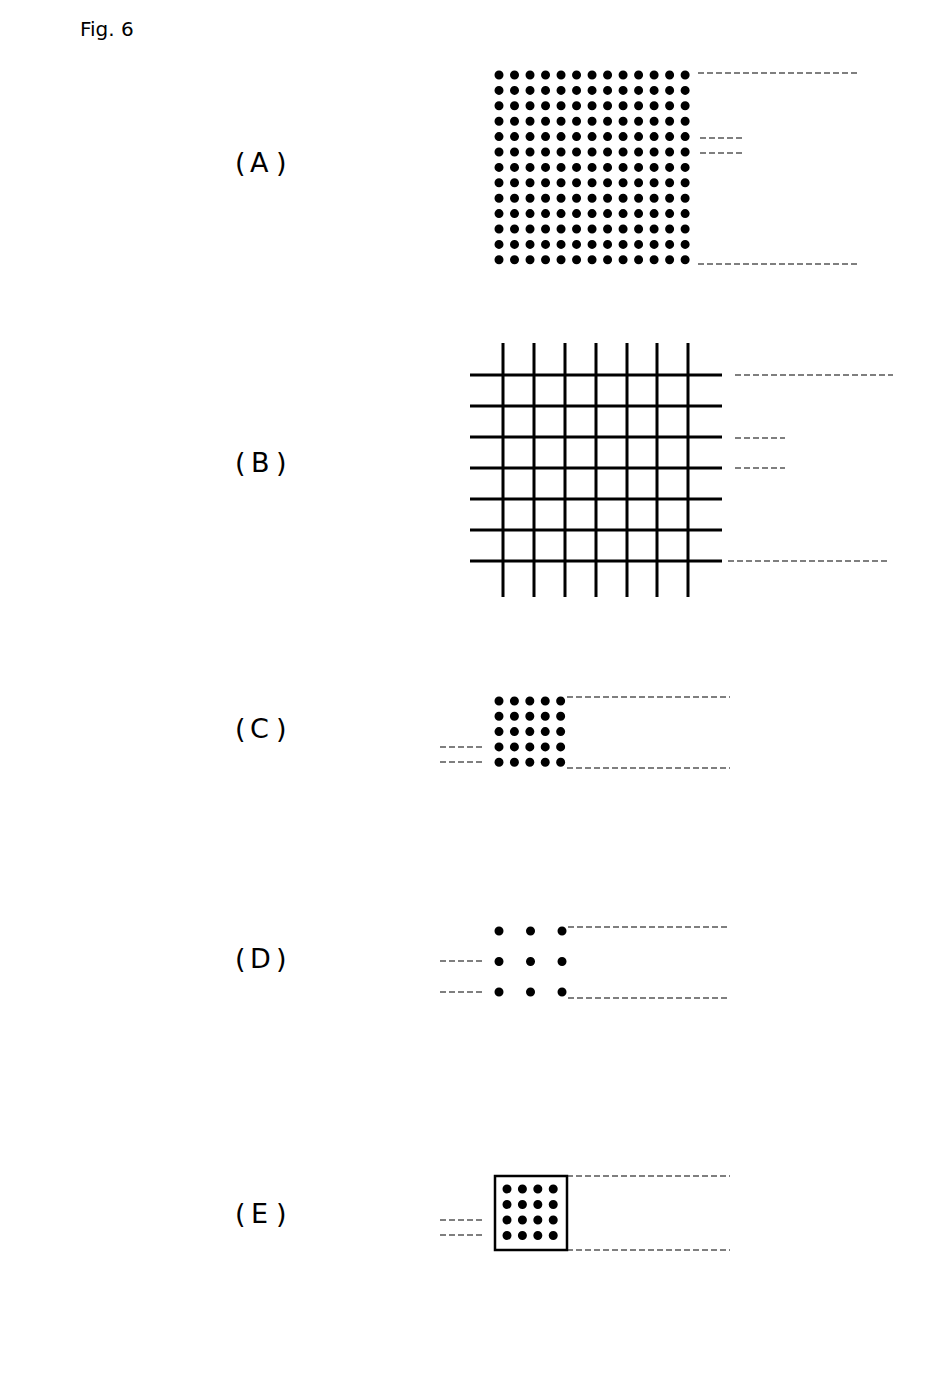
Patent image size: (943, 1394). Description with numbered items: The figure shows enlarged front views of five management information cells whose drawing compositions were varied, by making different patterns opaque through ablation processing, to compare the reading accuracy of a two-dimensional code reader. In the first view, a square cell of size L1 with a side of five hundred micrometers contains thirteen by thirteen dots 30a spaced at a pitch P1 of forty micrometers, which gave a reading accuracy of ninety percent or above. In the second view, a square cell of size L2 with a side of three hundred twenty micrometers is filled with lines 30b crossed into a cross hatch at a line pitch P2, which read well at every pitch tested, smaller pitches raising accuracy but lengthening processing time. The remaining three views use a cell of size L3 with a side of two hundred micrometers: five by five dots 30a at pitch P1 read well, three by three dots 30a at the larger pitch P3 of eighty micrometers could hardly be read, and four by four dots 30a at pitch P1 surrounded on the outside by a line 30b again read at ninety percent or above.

The dots 30a is at (499, 92).
The lines 30b is at (470, 401).
The size of cell L1 is at (793, 84).
The size of cell L2 is at (835, 386).
The size of cell L3 is at (666, 708).
The pitch between dots P1 is at (718, 100).
The pitch of lines P2 is at (760, 400).
The pitch between dots P3 is at (460, 922).